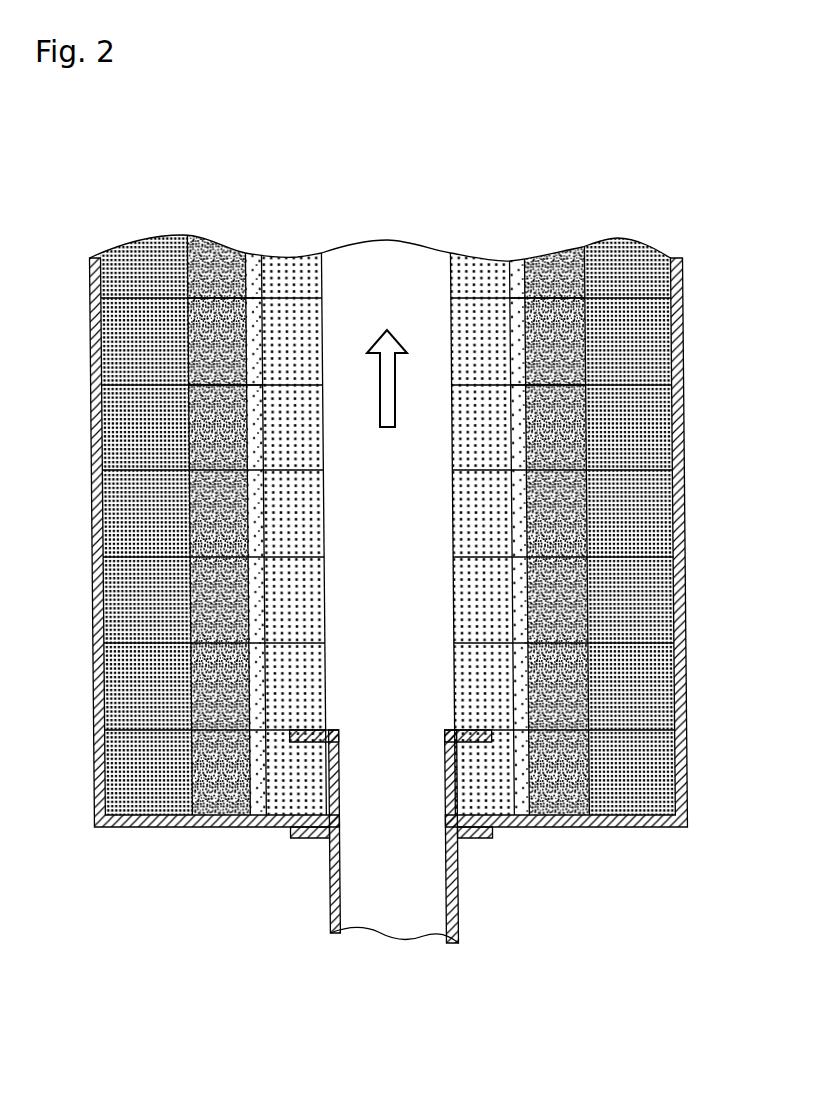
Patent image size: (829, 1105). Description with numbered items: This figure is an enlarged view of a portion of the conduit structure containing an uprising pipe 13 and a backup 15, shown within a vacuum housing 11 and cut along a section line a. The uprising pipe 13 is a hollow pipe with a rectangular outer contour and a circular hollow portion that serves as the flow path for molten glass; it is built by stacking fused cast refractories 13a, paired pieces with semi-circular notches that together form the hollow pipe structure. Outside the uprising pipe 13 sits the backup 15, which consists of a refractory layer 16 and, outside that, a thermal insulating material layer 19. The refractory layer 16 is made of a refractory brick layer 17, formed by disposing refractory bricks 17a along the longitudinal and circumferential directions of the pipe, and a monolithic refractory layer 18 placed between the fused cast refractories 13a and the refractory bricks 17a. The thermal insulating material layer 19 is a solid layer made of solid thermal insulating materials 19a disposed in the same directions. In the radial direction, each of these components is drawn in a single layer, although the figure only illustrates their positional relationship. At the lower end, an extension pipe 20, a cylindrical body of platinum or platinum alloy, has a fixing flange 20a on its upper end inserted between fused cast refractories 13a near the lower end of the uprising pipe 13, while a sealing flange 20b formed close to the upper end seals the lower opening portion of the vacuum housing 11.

The vacuum housing 11 is at (97, 355).
The uprising pipe 13 is at (263, 147).
The fused cast refractories 13a is at (497, 608).
The backup 15 is at (105, 147).
The refractory layer 16 is at (260, 189).
The refractory brick layer 17 is at (214, 255).
The refractory bricks 17a is at (563, 672).
The monolithic refractory layer 18 is at (255, 260).
The thermal insulating material layer 19 is at (144, 250).
The solid thermal insulating materials 19a is at (655, 708).
The extension pipe 20 is at (329, 920).
The fixing flange 20a is at (290, 735).
The sealing flange 20b is at (303, 840).
The section line a is at (80, 453).